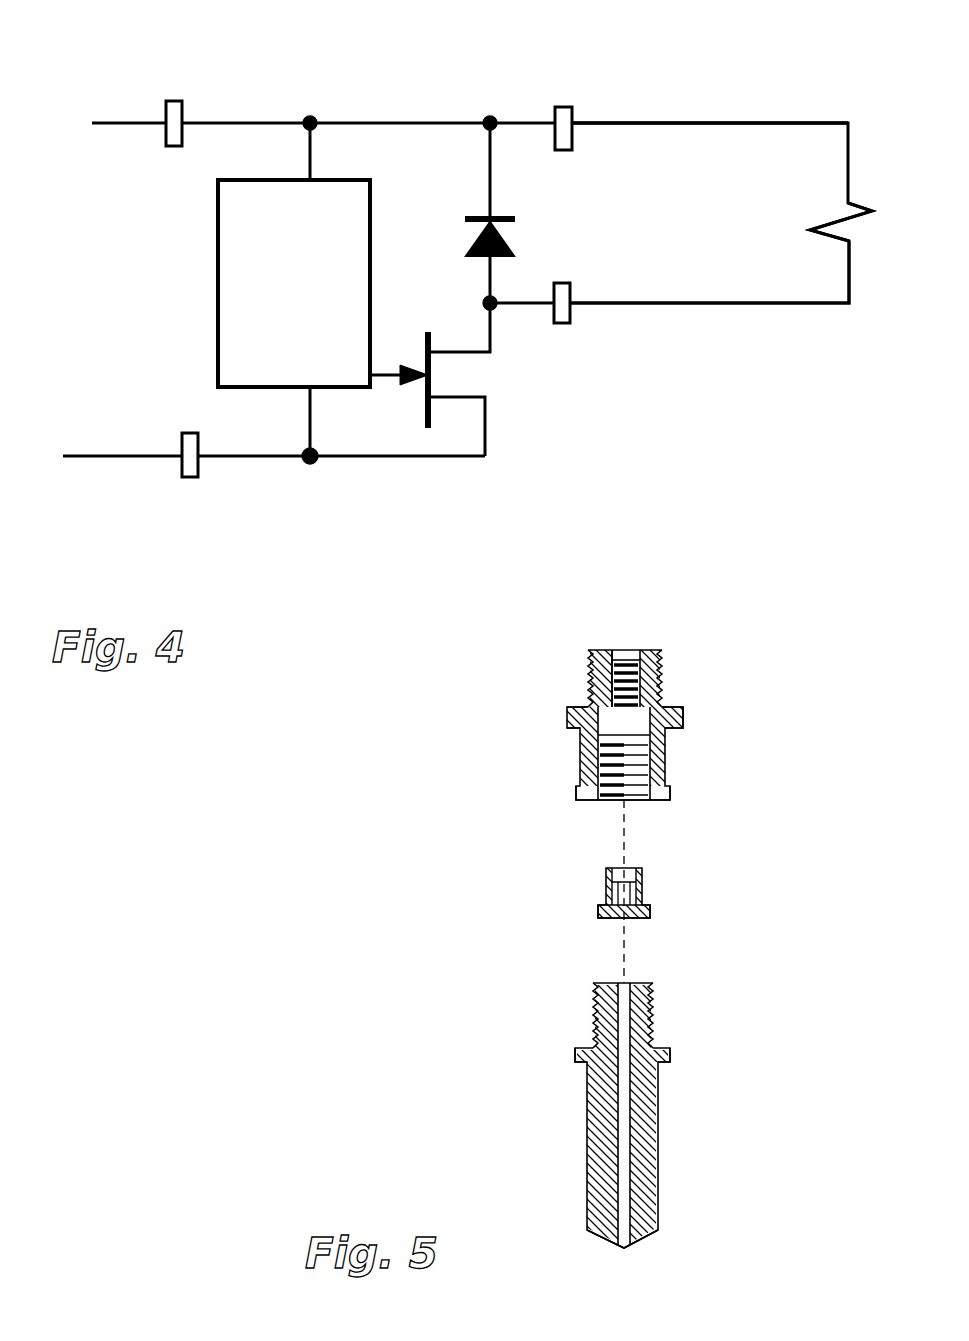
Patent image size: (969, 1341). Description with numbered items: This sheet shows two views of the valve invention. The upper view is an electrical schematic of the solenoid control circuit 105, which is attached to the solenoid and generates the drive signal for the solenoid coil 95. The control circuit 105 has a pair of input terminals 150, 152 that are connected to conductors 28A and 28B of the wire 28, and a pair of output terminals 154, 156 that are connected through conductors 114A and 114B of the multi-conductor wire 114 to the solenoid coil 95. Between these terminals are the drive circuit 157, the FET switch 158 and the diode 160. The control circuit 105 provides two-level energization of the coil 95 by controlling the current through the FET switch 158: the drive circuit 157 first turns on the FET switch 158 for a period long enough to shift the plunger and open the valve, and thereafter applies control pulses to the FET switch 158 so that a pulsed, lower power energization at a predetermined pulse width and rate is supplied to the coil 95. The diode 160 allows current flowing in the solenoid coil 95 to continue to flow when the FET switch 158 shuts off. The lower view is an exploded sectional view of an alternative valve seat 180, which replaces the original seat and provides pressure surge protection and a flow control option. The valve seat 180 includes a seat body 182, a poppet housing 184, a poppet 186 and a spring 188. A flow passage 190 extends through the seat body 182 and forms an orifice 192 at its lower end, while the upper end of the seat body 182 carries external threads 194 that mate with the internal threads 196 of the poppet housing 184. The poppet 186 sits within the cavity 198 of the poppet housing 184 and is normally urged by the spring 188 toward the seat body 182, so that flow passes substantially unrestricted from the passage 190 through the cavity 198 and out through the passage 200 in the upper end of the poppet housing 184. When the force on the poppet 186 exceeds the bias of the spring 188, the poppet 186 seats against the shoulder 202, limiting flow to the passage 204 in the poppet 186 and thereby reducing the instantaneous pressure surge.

In FIG. 4, the wire 28 is at (100, 100).
In FIG. 4, the conductor 28A is at (125, 123).
In FIG. 4, the conductor 28B is at (103, 455).
In FIG. 4, the solenoid coil 95 is at (872, 212).
In FIG. 4, the solenoid control circuit 105 is at (300, 500).
In FIG. 4, the multi-conductor wire 114 is at (680, 106).
In FIG. 4, the conductor 114A is at (727, 123).
In FIG. 4, the conductor 114B is at (738, 303).
In FIG. 4, the input terminal 150 is at (180, 100).
In FIG. 4, the input terminal 152 is at (188, 479).
In FIG. 4, the output terminal 154 is at (562, 105).
In FIG. 4, the output terminal 156 is at (559, 325).
In FIG. 4, the drive circuit 157 is at (372, 215).
In FIG. 4, the FET switch 158 is at (475, 375).
In FIG. 4, the diode 160 is at (512, 240).
In FIG. 5, the valve seat 180 is at (485, 810).
In FIG. 5, the seat body 182 is at (585, 1062).
In FIG. 5, the poppet housing 184 is at (682, 728).
In FIG. 5, the poppet 186 is at (606, 885).
In FIG. 5, the spring 188 is at (612, 688).
In FIG. 5, the flow passage 190 is at (628, 1115).
In FIG. 5, the orifice 192 is at (626, 1247).
In FIG. 5, the external threads 194 is at (655, 1000).
In FIG. 5, the internal threads 196 is at (666, 770).
In FIG. 5, the cavity 198 is at (610, 724).
In FIG. 5, the passage 200 is at (620, 652).
In FIG. 5, the shoulder 202 is at (650, 702).
In FIG. 5, the passage 204 is at (618, 916).